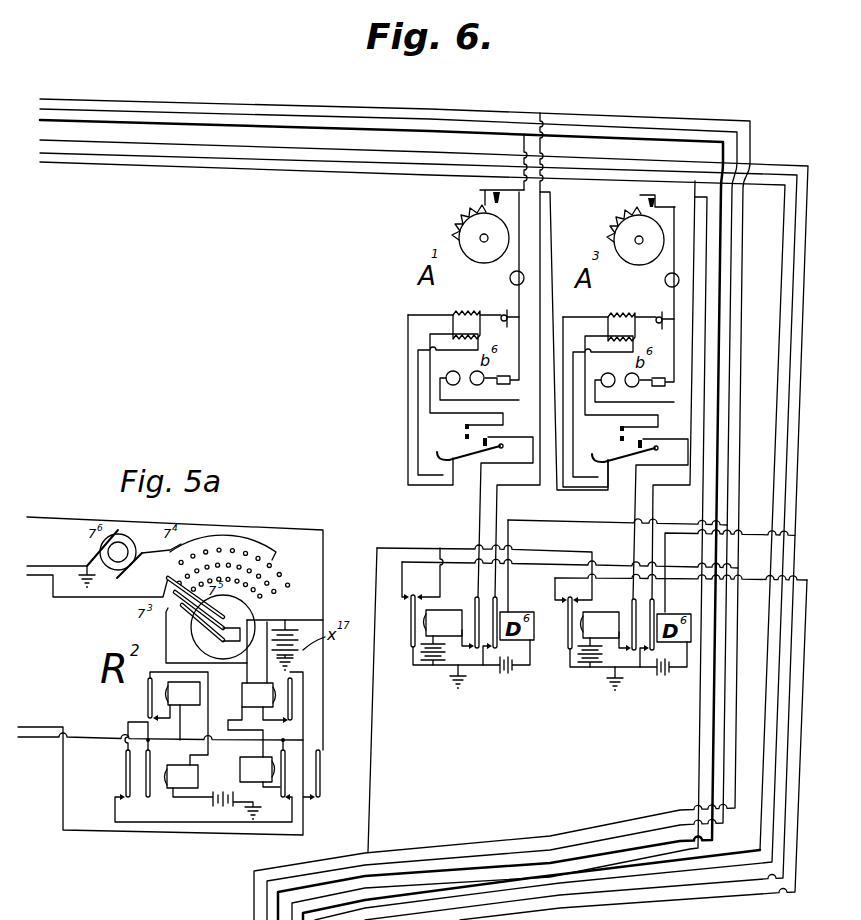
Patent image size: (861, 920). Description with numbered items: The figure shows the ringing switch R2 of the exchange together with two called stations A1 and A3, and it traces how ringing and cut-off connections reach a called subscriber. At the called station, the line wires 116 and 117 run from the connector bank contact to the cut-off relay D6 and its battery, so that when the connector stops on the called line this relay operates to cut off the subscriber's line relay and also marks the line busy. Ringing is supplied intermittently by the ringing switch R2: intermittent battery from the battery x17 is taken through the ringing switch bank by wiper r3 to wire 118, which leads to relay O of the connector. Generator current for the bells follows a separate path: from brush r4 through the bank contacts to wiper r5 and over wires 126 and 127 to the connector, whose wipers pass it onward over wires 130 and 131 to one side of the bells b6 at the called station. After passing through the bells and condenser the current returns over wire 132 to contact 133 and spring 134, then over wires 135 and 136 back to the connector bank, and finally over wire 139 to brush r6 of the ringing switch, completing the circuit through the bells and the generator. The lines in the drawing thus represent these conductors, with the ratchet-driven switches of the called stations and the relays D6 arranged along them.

In FIG. 6, the wire 116 is at (137, 100).
In FIG. 6, the wire 130 is at (254, 114).
In FIG. 6, the wire 136 is at (317, 132).
In FIG. 6, the wire 135 is at (522, 148).
In FIG. 6, the wire 131 is at (545, 149).
In FIG. 6, the spring 134 is at (478, 191).
In FIG. 6, the contact 133 is at (480, 206).
In FIG. 6, the wire 132 is at (515, 297).
In FIG. 6, the wire 117 is at (553, 526).
In FIG. 5A, the wire 127 is at (276, 532).
In FIG. 5A, the wire 139 is at (38, 566).
In FIG. 5A, the wire 118 is at (113, 598).
In FIG. 5A, the wire 126 is at (277, 619).